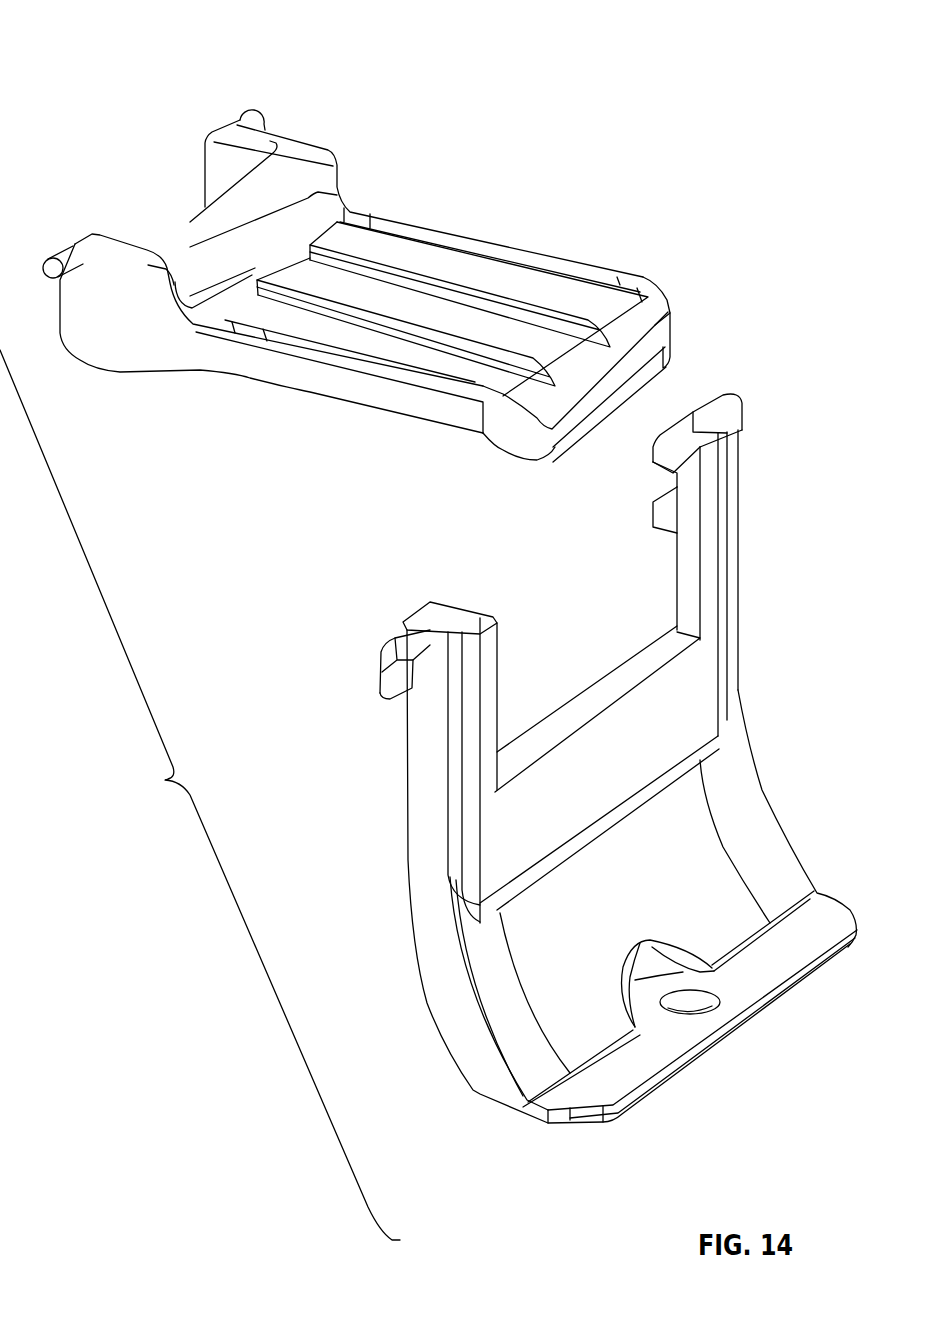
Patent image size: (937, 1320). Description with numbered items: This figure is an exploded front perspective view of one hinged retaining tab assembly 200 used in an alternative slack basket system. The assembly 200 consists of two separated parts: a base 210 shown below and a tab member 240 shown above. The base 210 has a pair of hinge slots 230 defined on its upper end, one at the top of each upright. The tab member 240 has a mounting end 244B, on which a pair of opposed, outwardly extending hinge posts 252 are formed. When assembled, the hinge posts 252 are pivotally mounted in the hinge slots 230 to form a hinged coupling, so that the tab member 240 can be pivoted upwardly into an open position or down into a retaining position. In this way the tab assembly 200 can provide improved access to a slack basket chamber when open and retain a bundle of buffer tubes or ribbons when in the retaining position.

The hinged retaining tab assembly 200 is at (138, 52).
The base 210 is at (430, 1046).
The hinge slot 230 is at (468, 600).
The tab member 240 is at (403, 168).
The mounting end 244B is at (117, 337).
The hinge post 252 is at (62, 258).